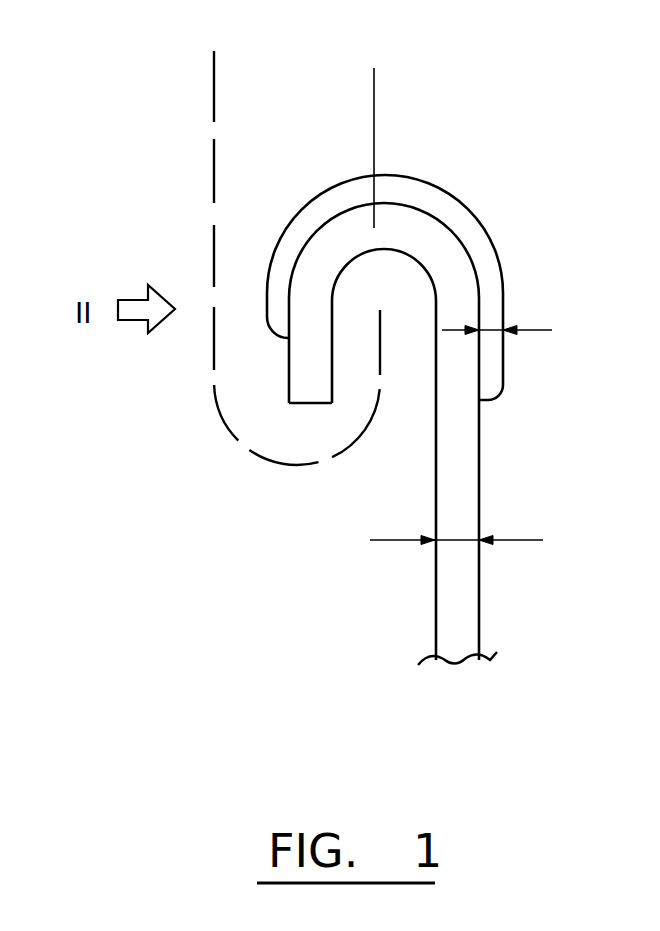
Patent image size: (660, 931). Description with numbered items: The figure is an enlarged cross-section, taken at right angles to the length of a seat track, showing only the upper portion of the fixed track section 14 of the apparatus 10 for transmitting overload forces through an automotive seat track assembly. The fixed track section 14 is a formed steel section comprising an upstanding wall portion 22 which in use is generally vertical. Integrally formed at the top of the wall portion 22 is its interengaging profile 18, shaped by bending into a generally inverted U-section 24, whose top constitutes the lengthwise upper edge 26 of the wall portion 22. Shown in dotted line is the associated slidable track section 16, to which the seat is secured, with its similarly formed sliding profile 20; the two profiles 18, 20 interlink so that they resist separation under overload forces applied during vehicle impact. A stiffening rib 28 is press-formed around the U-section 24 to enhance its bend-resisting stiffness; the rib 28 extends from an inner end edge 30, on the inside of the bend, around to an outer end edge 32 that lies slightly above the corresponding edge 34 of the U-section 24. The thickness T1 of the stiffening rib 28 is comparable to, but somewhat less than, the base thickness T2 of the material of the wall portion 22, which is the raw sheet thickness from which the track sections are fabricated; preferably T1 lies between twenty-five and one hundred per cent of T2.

The apparatus for transmitting overload forces 10 is at (502, 488).
The fixed track section 14 is at (482, 622).
The slidable track section 16 is at (213, 173).
The interengaging profile 18 is at (318, 195).
The sliding profile 20 is at (297, 465).
The upstanding wall portion 22 is at (462, 450).
The inverted U-section 24 is at (376, 127).
The upper edge 26 is at (403, 203).
The stiffening rib 28 is at (462, 223).
The inner end edge 30 is at (482, 400).
The outer end edge 32 is at (287, 338).
The edge of U-section 34 is at (295, 405).
The thickness of the rib T1 is at (487, 330).
The thickness of the base material T2 is at (453, 542).